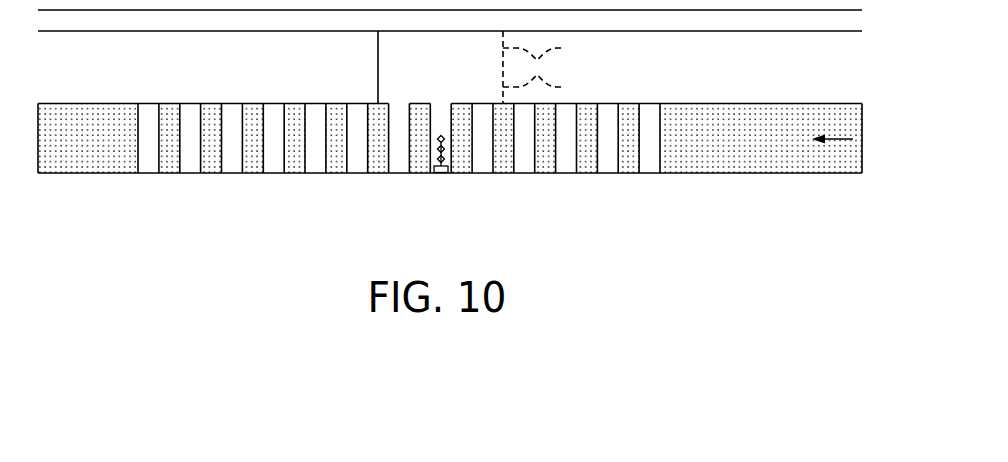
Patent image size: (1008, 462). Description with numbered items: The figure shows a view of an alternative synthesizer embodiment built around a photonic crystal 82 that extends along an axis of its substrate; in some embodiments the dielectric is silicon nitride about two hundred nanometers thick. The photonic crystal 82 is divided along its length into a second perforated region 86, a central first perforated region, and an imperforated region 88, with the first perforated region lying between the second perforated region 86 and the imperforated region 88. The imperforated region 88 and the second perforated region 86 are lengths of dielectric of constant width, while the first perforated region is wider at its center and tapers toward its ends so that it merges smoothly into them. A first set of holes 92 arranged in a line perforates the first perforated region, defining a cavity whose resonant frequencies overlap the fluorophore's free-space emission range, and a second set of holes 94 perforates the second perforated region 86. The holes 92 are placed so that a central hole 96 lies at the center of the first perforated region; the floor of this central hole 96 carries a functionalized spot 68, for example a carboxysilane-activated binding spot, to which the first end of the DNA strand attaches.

The second set of holes 94 is at (193, 78).
The central hole 96 is at (441, 101).
The photonic crystal 82 is at (663, 104).
The second perforated region 86 is at (85, 148).
The imperforated region 88 is at (755, 150).
The functionalized spot 68 is at (444, 173).
The first set of holes 92 is at (485, 166).